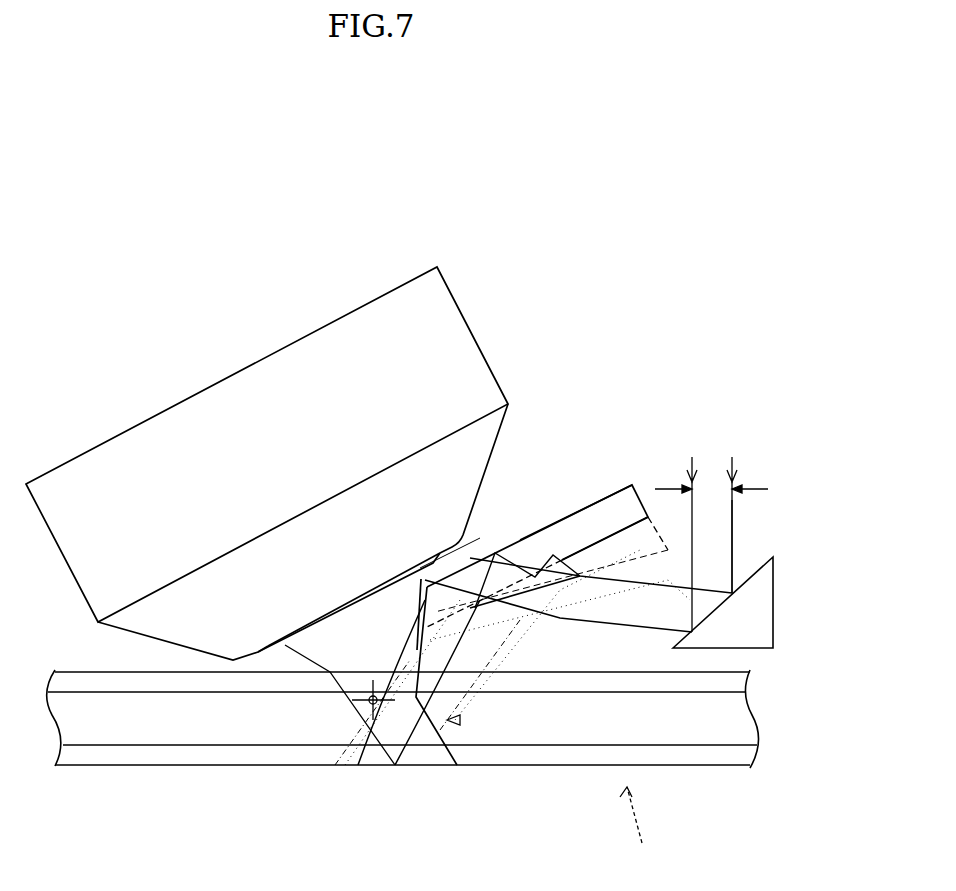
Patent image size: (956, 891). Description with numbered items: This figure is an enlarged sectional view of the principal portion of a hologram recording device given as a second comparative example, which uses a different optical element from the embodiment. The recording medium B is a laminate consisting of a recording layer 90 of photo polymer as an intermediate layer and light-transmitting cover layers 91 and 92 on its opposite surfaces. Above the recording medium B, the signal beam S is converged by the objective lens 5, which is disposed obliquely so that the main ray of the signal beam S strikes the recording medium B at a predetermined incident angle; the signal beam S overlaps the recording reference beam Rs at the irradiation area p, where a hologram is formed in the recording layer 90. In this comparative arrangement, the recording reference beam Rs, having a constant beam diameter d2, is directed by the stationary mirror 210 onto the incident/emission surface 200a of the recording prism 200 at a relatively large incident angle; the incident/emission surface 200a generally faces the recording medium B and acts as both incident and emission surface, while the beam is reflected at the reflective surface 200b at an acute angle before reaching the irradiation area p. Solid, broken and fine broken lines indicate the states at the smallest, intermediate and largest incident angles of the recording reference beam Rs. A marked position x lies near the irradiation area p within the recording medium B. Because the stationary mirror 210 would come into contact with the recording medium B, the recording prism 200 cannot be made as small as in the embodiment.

The objective lens 5 is at (481, 341).
The signal beam S is at (363, 630).
The recording prism 200 is at (640, 474).
The incident/emission surface 200a is at (596, 548).
The reflective surface 200b is at (530, 546).
The beam diameter d2 is at (727, 544).
The recording reference beam Rs is at (733, 528).
The stationary mirror 210 is at (757, 597).
The recording layer 90 is at (733, 720).
The cover layer 91 is at (737, 688).
The cover layer 92 is at (748, 757).
The reading position x is at (368, 712).
The irradiation area p is at (447, 720).
The recording medium B is at (637, 826).